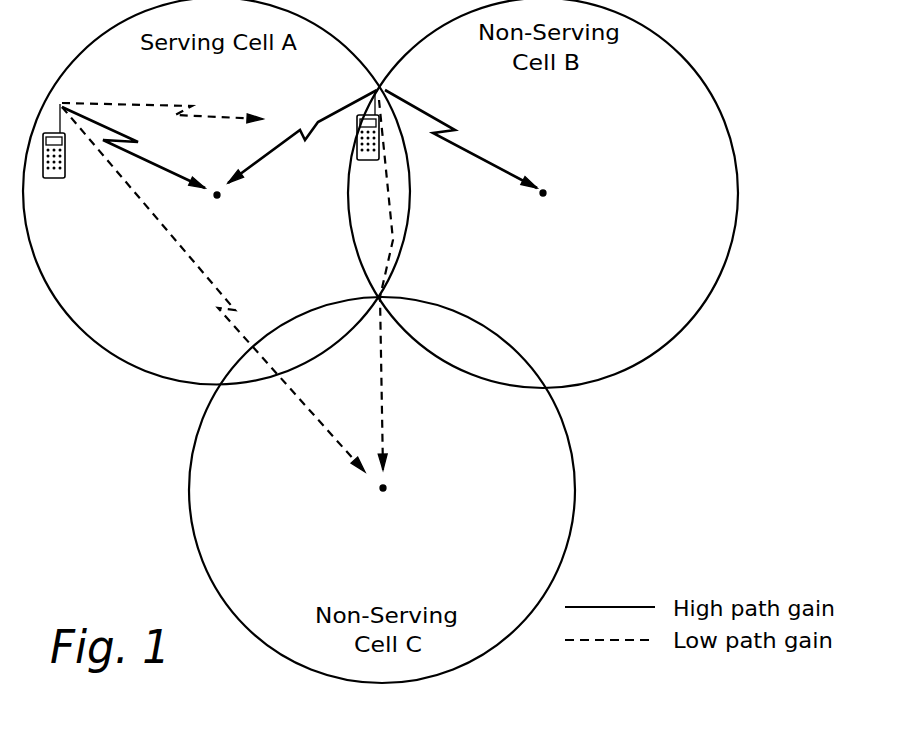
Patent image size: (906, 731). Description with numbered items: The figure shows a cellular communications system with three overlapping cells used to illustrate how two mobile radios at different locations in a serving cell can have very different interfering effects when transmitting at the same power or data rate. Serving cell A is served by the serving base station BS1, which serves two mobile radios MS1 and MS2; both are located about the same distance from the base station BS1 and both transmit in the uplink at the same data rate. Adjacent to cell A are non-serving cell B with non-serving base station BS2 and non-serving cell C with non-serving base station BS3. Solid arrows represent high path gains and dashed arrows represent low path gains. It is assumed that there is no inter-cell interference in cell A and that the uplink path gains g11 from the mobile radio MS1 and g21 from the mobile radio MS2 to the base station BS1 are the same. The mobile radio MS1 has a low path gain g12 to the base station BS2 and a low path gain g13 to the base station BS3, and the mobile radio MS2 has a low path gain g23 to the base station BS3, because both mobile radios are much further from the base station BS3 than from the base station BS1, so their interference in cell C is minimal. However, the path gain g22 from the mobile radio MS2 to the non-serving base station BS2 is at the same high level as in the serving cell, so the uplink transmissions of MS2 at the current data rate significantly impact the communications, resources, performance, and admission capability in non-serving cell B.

The mobile radio MS1 is at (55, 156).
The mobile radio MS2 is at (383, 140).
The serving base station BS1 is at (221, 212).
The non-serving base station BS2 is at (544, 210).
The non-serving base station BS3 is at (385, 506).
The uplink path gain g11 is at (133, 147).
The path gain g12 is at (162, 99).
The path gain g13 is at (213, 289).
The uplink path gain g21 is at (302, 136).
The path gain g22 is at (461, 139).
The path gain g23 is at (402, 285).